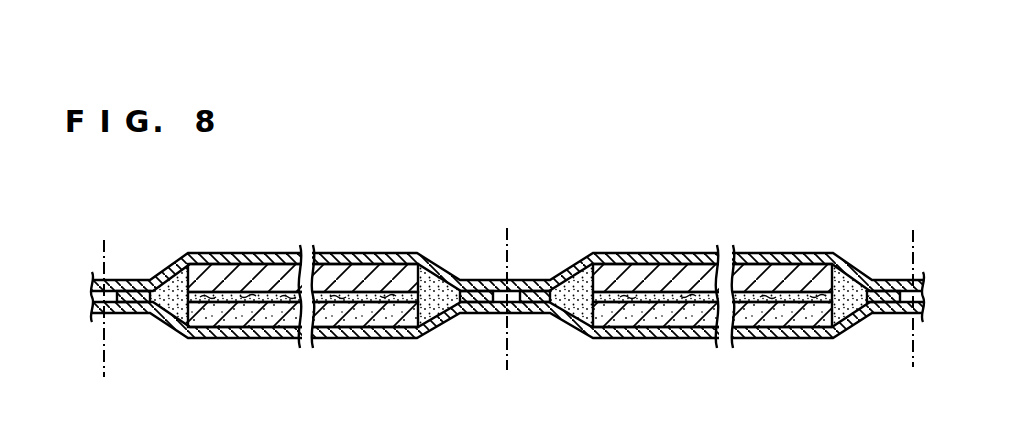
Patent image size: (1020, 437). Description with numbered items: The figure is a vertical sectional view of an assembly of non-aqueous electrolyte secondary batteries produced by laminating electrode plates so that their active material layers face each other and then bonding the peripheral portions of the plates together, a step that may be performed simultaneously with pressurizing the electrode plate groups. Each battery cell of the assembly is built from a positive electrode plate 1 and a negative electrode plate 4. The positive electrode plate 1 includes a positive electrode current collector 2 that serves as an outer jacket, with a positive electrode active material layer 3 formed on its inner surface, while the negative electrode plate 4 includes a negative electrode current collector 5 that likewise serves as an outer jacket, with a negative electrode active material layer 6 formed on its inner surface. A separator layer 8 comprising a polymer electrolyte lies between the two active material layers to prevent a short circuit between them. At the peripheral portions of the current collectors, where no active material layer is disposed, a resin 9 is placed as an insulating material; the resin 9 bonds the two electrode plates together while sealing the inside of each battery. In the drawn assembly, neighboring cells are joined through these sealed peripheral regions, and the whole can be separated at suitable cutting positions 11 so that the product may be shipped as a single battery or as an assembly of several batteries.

The positive electrode plate 1 is at (507, 369).
The positive electrode current collector 2 is at (219, 333).
The positive electrode active material layer 3 is at (195, 390).
The negative electrode plate 4 is at (507, 222).
The negative electrode current collector 5 is at (336, 262).
The negative electrode active material layer 6 is at (325, 205).
The separator layer 8 is at (243, 290).
The resin 9 is at (138, 303).
The cutting positions 11 is at (507, 232).